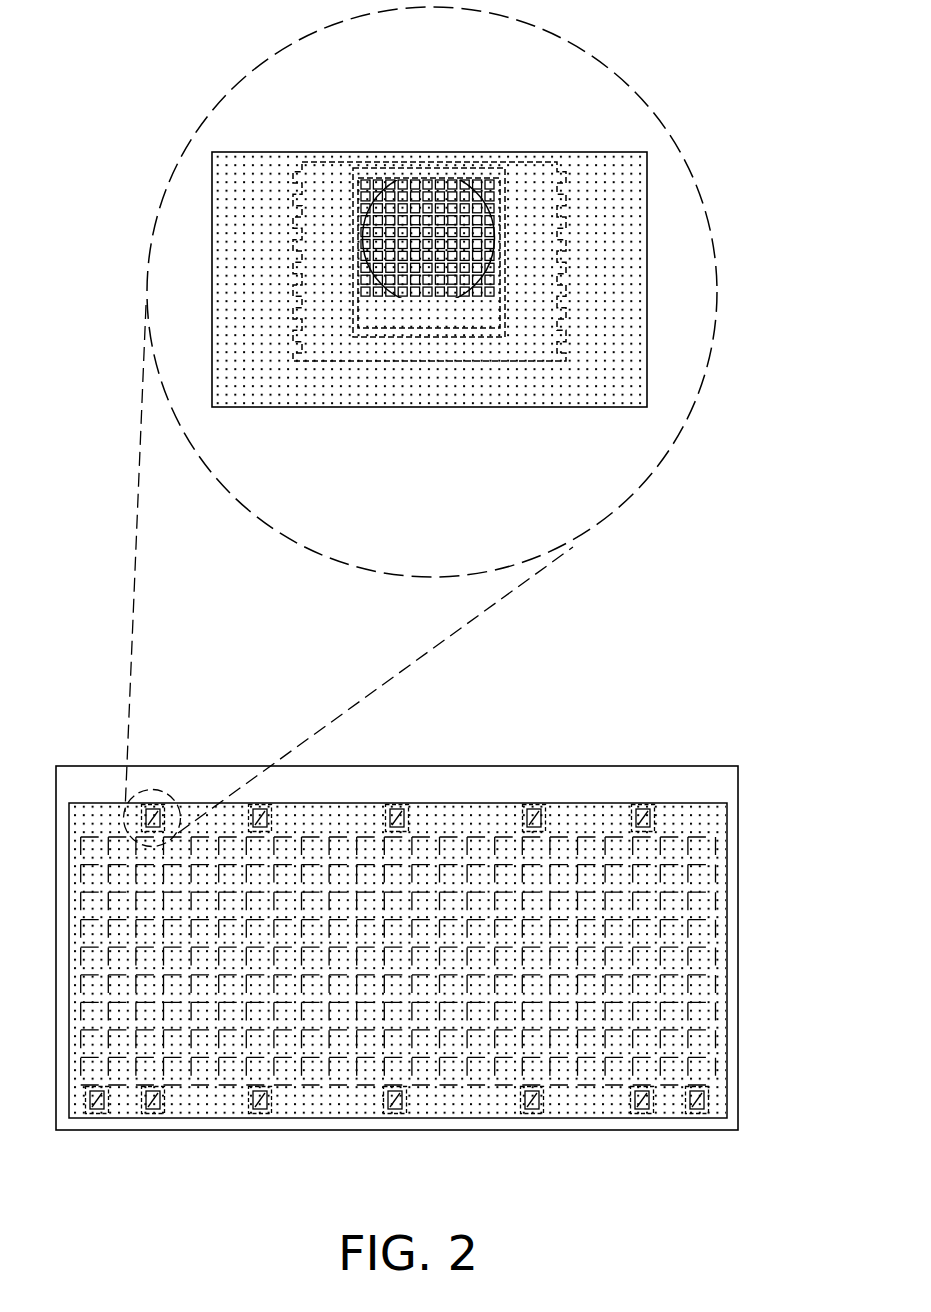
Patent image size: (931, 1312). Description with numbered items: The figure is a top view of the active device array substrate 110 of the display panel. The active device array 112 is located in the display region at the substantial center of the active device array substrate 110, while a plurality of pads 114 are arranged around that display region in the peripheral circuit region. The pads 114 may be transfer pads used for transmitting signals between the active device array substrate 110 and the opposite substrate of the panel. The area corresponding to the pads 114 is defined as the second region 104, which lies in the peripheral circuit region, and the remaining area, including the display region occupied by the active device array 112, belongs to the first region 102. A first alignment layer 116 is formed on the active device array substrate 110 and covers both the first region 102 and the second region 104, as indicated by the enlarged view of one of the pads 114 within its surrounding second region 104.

The first region 102 is at (457, 823).
The second region 104 is at (340, 160).
The active device array substrate 110 is at (780, 1185).
The active device array 112 is at (700, 836).
The pad 114 is at (505, 237).
The first alignment layer 116 is at (703, 817).